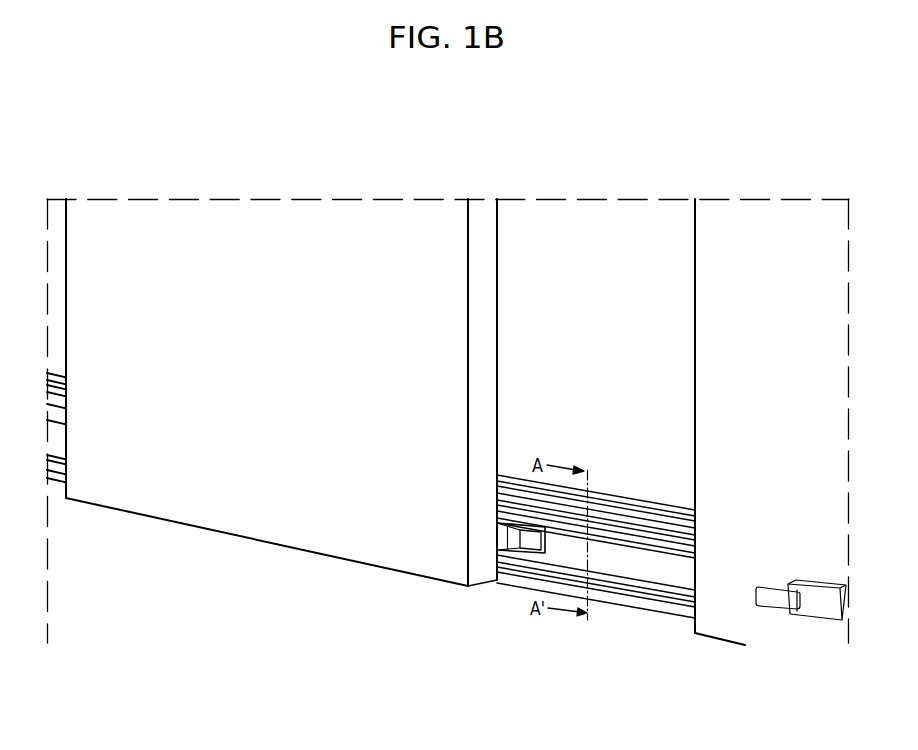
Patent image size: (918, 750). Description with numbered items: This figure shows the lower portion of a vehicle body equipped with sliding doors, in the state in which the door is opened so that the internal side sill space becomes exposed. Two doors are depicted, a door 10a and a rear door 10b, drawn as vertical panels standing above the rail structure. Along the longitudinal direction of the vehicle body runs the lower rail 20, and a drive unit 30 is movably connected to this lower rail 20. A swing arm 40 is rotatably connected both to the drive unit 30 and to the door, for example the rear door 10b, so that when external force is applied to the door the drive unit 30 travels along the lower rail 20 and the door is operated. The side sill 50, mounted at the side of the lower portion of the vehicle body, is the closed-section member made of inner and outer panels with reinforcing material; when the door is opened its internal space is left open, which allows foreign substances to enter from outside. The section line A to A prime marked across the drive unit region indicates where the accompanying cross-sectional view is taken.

The door 10a is at (282, 228).
The rear door 10b is at (766, 242).
The lower rail 20 is at (673, 567).
The drive unit 30 is at (535, 540).
The swing arm 40 is at (507, 552).
The side sill 50 is at (620, 506).